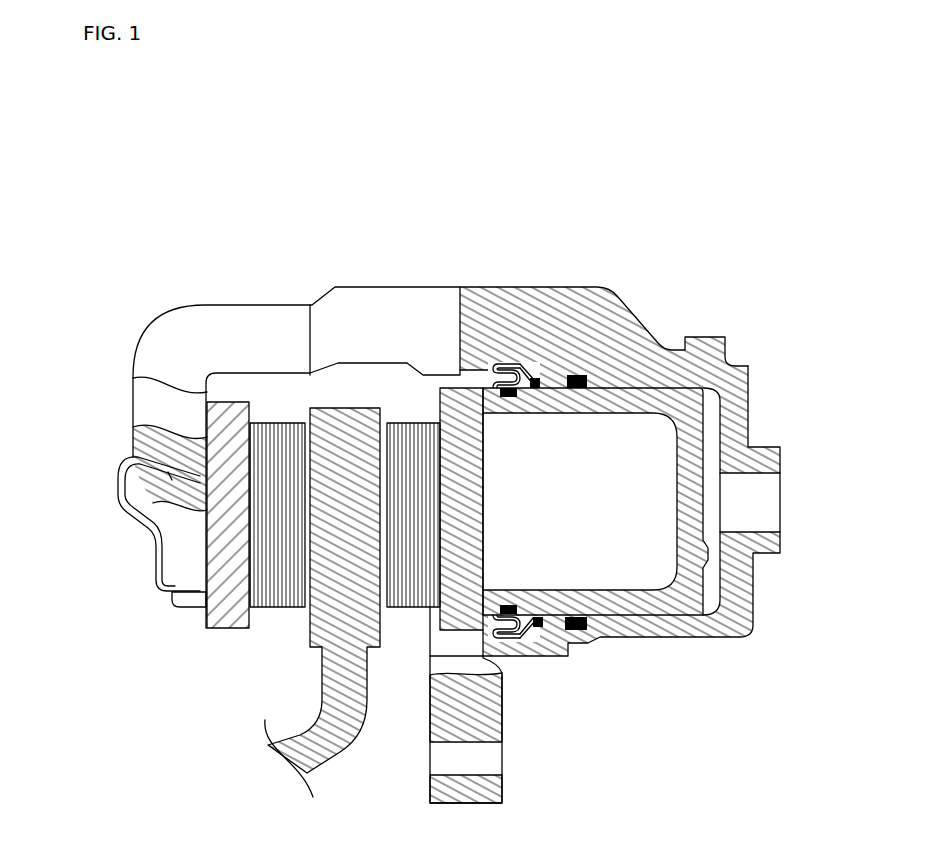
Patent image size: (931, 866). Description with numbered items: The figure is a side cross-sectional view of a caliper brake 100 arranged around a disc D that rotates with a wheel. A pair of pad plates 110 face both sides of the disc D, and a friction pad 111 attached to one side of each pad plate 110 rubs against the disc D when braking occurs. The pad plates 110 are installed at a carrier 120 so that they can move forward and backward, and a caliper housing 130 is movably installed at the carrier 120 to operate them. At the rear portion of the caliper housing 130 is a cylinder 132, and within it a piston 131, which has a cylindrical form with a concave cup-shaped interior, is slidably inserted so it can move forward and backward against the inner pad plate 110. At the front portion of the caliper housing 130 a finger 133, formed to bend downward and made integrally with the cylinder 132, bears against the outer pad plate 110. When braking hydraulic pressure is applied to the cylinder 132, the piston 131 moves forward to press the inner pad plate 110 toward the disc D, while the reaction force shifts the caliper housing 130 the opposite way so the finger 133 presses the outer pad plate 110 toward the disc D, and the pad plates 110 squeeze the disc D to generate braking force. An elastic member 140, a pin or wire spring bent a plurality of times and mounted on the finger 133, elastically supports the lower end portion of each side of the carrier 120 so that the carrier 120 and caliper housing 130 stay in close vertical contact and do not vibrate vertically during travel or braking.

The caliper brake 100 is at (219, 131).
The pad plate 110 is at (218, 618).
The friction pad 111 is at (268, 608).
The carrier 120 is at (490, 725).
The caliper housing 130 is at (440, 413).
The piston 131 is at (675, 603).
The cylinder 132 is at (740, 592).
The finger 133 is at (140, 444).
The elastic member 140 is at (116, 532).
The disc D is at (328, 750).